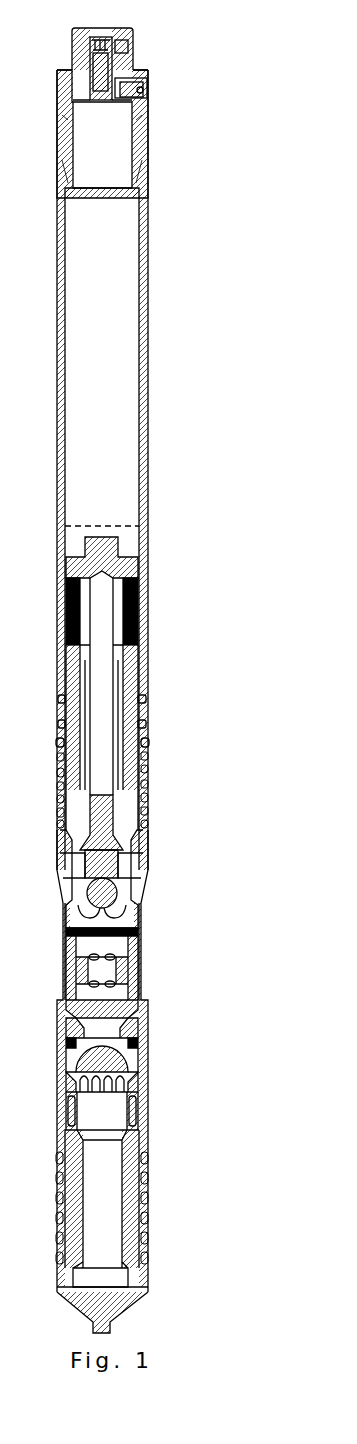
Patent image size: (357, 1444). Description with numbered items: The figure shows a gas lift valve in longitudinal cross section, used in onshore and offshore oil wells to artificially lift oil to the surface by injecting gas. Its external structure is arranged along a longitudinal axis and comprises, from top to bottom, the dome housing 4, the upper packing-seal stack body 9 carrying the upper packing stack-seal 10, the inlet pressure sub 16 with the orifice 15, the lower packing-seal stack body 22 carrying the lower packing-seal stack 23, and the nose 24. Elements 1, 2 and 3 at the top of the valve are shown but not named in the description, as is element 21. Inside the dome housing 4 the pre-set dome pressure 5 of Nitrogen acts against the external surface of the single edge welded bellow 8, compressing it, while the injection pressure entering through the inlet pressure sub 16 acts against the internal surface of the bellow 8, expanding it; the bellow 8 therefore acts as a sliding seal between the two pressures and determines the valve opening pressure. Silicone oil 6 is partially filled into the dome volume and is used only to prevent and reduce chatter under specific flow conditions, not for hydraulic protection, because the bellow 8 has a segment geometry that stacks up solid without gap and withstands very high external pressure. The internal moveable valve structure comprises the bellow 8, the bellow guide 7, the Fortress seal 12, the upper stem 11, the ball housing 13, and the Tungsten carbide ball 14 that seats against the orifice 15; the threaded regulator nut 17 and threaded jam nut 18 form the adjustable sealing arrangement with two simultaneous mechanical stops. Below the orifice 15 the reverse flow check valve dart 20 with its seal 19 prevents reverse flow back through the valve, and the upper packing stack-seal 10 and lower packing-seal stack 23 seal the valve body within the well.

The top cap 1 is at (138, 26).
The pin 2 is at (118, 66).
The side plug 3 is at (146, 80).
The dome housing 4 is at (147, 262).
The dome pressure 5 is at (123, 321).
The silicone oil 6 is at (123, 524).
The bellow guide 7 is at (128, 554).
The edge welded bellow 8 is at (141, 582).
The upper packing-seal stack body 9 is at (149, 712).
The upper packing stack-seal 10 is at (151, 745).
The upper stem 11 is at (140, 790).
The Fortress seal 12 is at (118, 805).
The ball housing 13 is at (130, 838).
The Tungsten carbide ball 14 is at (150, 870).
The orifice 15 is at (149, 932).
The inlet pressure sub 16 is at (145, 950).
The threaded regulator nut 17 is at (137, 963).
The threaded jam nut 18 is at (145, 970).
The seal 19 is at (145, 1030).
The reverse flow check valve dart 20 is at (133, 1060).
The spring arches 21 is at (143, 1092).
The lower packing-seal stack body 22 is at (153, 1122).
The lower packing-seal stack 23 is at (153, 1188).
The nose 24 is at (150, 1262).